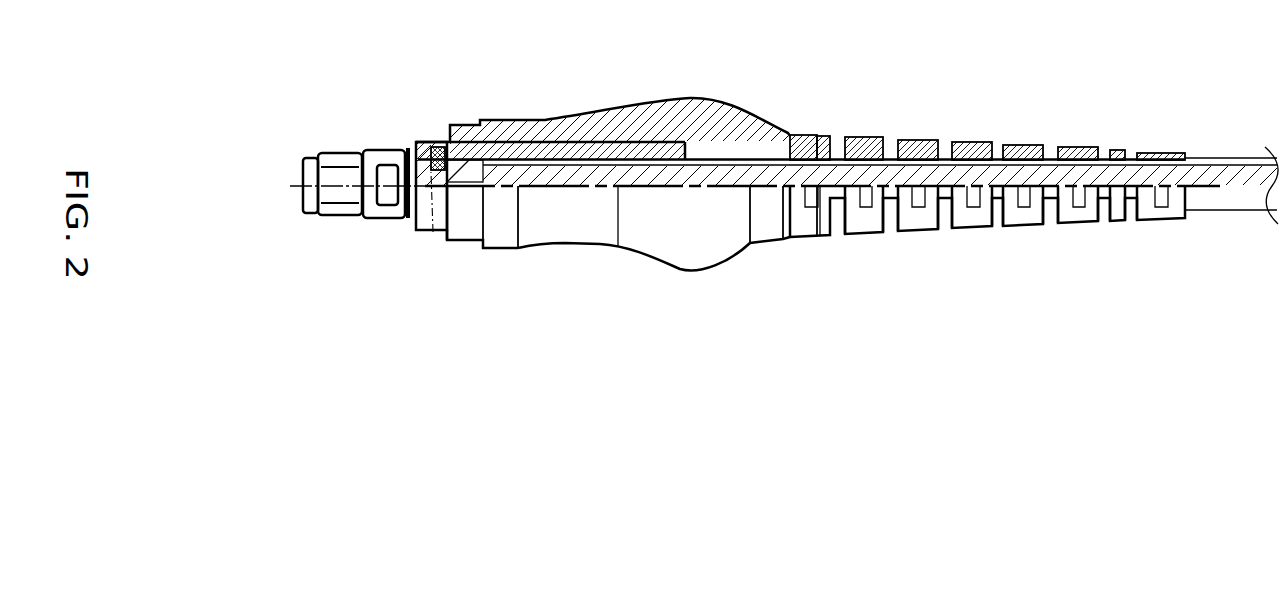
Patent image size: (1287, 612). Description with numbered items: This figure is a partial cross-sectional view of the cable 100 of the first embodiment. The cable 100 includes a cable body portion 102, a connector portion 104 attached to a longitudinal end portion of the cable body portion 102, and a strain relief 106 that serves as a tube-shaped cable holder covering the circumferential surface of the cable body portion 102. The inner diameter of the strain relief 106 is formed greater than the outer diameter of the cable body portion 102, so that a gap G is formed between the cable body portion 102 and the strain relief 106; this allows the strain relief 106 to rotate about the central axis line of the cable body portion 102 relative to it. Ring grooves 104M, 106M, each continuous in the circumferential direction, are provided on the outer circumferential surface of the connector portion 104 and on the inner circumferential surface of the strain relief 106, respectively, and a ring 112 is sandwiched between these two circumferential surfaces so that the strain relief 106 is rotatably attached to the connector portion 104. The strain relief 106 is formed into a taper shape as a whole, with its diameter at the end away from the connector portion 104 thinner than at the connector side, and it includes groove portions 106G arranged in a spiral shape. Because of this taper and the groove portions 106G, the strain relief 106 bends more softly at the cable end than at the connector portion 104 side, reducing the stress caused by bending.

The cable 100 is at (1178, 427).
The cable body portion 102 is at (1070, 180).
The connector portion 104 is at (423, 232).
The ring groove 104M is at (433, 232).
The strain relief 106 is at (800, 169).
The groove portions 106G is at (890, 212).
The ring groove 106M is at (441, 145).
The ring 112 is at (420, 141).
The gap G is at (791, 162).